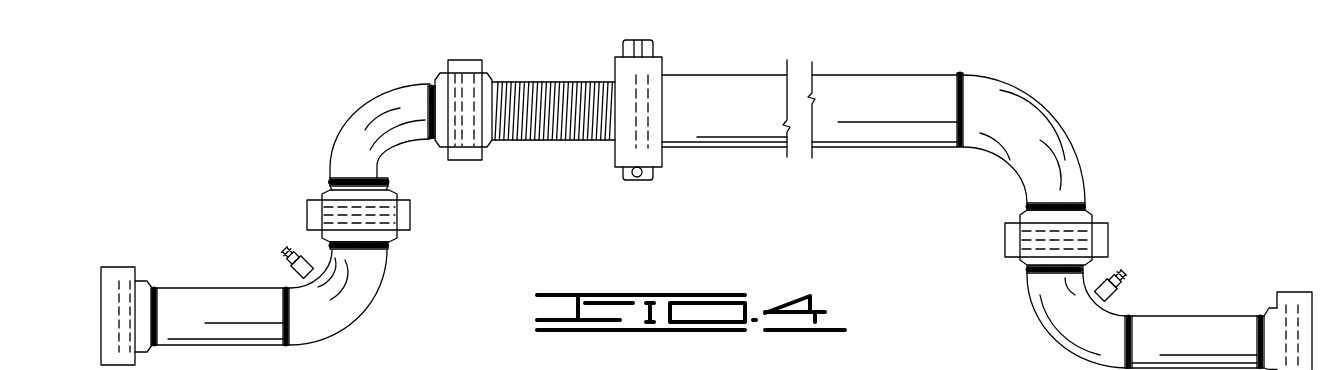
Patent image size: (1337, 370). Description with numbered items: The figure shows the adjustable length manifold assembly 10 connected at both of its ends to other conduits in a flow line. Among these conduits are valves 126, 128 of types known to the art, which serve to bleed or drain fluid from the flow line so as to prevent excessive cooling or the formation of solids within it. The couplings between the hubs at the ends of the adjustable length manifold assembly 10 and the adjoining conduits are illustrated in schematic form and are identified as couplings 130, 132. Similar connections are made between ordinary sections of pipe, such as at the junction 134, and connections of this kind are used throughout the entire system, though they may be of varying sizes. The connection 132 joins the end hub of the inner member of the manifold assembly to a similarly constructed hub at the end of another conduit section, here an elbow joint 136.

The adjustable length manifold assembly 10 is at (685, 62).
The valve 126 is at (1126, 278).
The valve 128 is at (288, 257).
The coupling 130 is at (1005, 243).
The connection 132 is at (465, 155).
The junction 134 is at (410, 228).
The elbow joint 136 is at (346, 110).